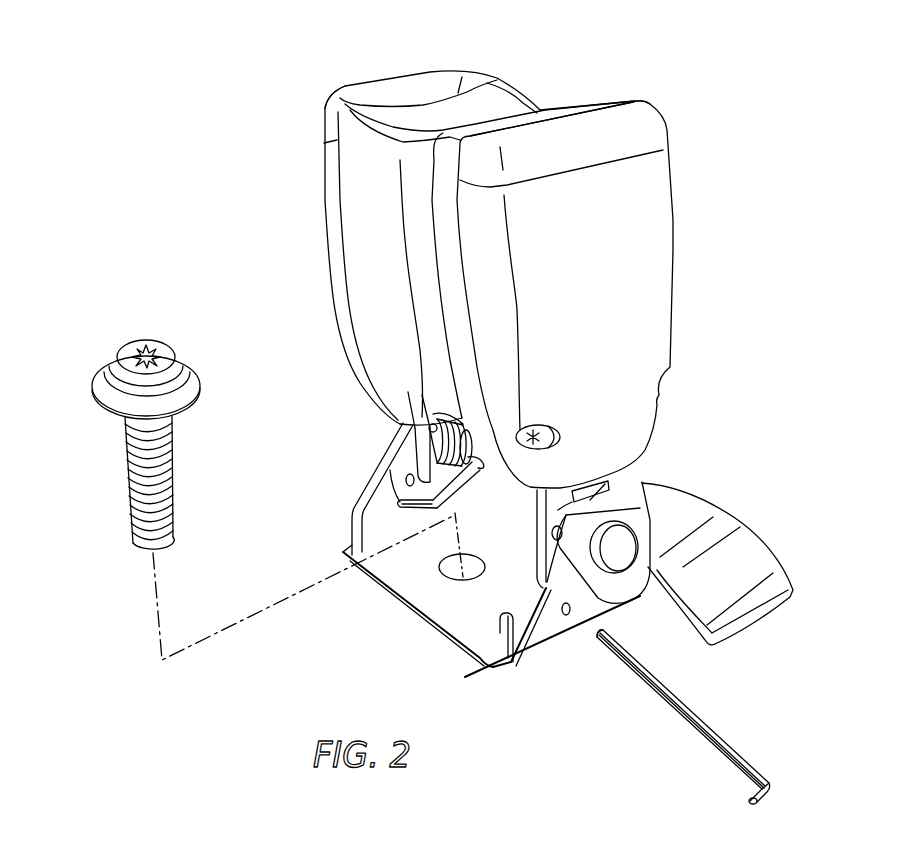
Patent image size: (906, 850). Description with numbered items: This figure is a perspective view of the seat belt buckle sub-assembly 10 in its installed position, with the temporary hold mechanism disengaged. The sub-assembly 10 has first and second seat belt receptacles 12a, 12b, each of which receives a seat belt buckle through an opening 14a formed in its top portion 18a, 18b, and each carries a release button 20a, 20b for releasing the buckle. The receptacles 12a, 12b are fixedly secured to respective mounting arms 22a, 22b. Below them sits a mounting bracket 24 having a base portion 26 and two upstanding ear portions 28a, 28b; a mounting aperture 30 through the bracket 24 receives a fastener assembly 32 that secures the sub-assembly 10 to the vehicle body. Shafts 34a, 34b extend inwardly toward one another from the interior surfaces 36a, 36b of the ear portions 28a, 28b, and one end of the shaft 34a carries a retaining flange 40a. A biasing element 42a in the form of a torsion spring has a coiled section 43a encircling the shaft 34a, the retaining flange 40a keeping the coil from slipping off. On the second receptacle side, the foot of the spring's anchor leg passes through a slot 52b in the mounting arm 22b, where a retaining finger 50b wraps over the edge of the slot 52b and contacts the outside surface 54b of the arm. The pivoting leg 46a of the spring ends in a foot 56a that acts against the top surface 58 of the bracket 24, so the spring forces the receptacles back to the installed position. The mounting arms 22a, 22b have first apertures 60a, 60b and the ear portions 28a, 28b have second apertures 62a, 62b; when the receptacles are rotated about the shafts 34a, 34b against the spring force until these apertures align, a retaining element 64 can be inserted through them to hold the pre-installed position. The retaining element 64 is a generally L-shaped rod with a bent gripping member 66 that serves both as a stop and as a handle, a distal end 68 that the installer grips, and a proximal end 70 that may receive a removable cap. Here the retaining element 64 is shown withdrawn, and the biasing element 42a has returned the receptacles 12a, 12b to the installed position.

The seat belt buckle sub-assembly 10 is at (186, 228).
The first seat belt receptacle 12a is at (357, 163).
The second seat belt receptacle 12b is at (655, 277).
The opening 14a is at (440, 103).
The top portion 18a is at (368, 75).
The top portion 18b is at (603, 97).
The release button 20a is at (503, 93).
The release button 20b is at (573, 107).
The mounting arm 22a is at (397, 420).
The mounting arm 22b is at (612, 492).
The mounting bracket 24 is at (417, 627).
The base portion 26 is at (478, 617).
The upstanding ear portion 28a is at (393, 460).
The upstanding ear portion 28b is at (532, 647).
The mounting aperture 30 is at (465, 575).
The fastener assembly 32 is at (100, 472).
The shaft 34a is at (407, 463).
The shaft 34b is at (640, 565).
The interior surface 36a is at (390, 506).
The interior surface 36b is at (508, 628).
The retaining flange 40a is at (350, 562).
The biasing element 42a is at (438, 413).
The coiled section 43a is at (445, 445).
The pivoting leg 46a is at (430, 508).
The retaining finger 50b is at (642, 482).
The slot 52b is at (642, 458).
The outside surface 54b is at (640, 510).
The foot 56a is at (397, 513).
The top surface 58 is at (430, 596).
The first aperture 60a is at (400, 418).
The first aperture 60b is at (613, 550).
The second aperture 62a is at (405, 480).
The second aperture 62b is at (567, 618).
The retaining element 64 is at (737, 740).
The gripping member 66 is at (768, 795).
The distal end 68 is at (748, 800).
The proximal end 70 is at (603, 634).